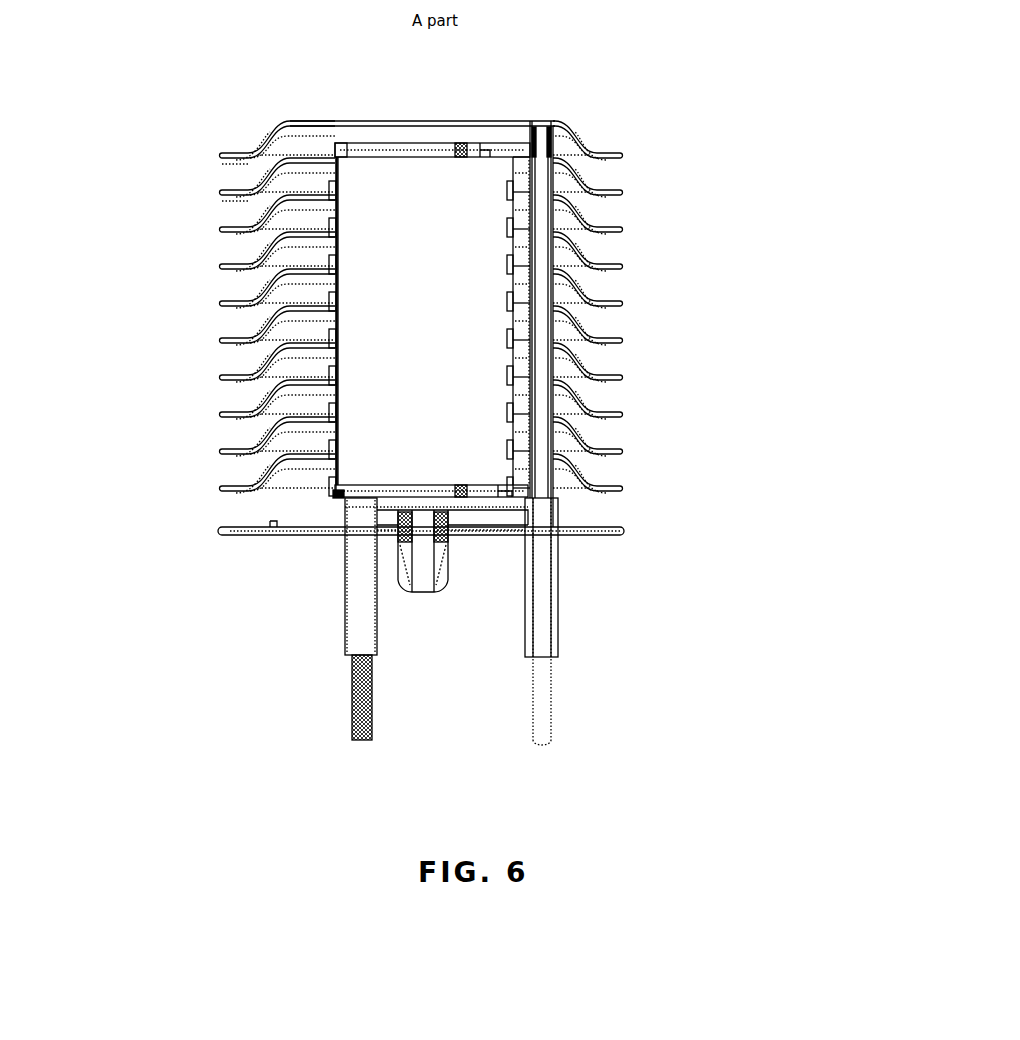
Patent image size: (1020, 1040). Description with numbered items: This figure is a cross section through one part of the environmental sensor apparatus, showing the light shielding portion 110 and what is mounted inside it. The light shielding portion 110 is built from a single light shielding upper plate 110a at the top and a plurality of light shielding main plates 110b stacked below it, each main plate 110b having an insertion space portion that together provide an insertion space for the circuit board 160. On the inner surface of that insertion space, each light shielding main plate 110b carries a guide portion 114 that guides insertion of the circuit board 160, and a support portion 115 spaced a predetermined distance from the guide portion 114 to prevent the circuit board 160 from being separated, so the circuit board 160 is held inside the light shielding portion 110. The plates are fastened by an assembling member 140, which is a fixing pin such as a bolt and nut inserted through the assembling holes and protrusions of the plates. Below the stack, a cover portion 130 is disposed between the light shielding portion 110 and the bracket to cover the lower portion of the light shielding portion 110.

The light shielding portion 110 is at (576, 328).
The light shielding upper plate 110a is at (585, 143).
The light shielding main plate 110b is at (590, 183).
The guide portion 114 is at (455, 150).
The support portion 115 is at (520, 183).
The cover portion 130 is at (471, 532).
The assembling member 140 is at (352, 690).
The circuit board 160 is at (415, 352).